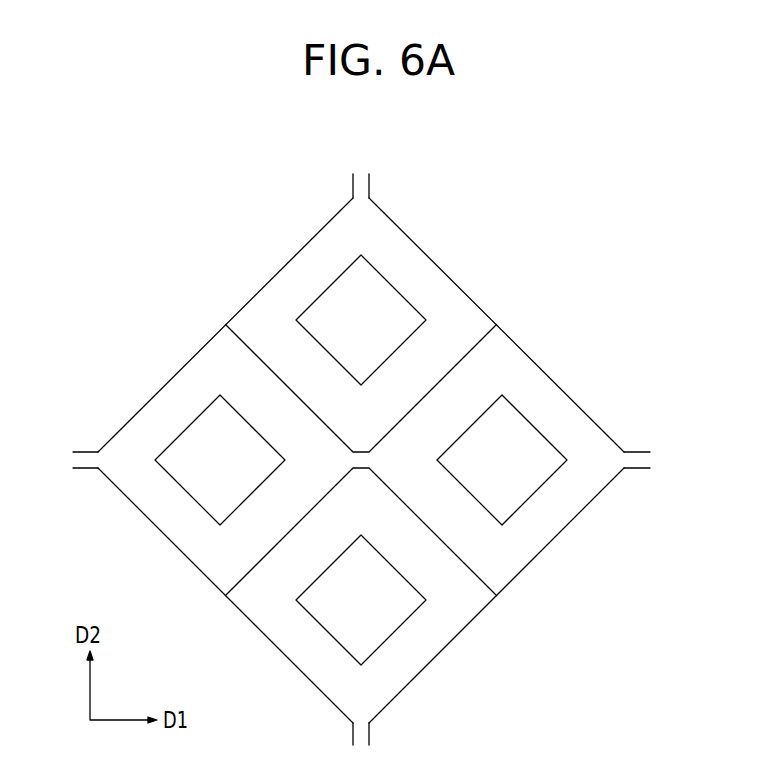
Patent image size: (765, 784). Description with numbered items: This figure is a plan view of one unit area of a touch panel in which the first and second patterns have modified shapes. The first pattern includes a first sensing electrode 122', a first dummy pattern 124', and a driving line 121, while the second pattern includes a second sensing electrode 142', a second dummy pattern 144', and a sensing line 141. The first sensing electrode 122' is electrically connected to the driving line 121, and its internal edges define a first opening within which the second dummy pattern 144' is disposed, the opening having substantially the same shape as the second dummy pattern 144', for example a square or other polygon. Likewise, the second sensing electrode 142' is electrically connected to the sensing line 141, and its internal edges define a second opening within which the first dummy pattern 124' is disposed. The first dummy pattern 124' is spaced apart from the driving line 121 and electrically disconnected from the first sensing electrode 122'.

The driving line 121 is at (352, 182).
The sensing line 141 is at (637, 467).
The first sensing electrode 122' is at (361, 325).
The second sensing electrode 142' is at (371, 552).
The first dummy pattern 124' is at (540, 480).
The second dummy pattern 144' is at (399, 618).